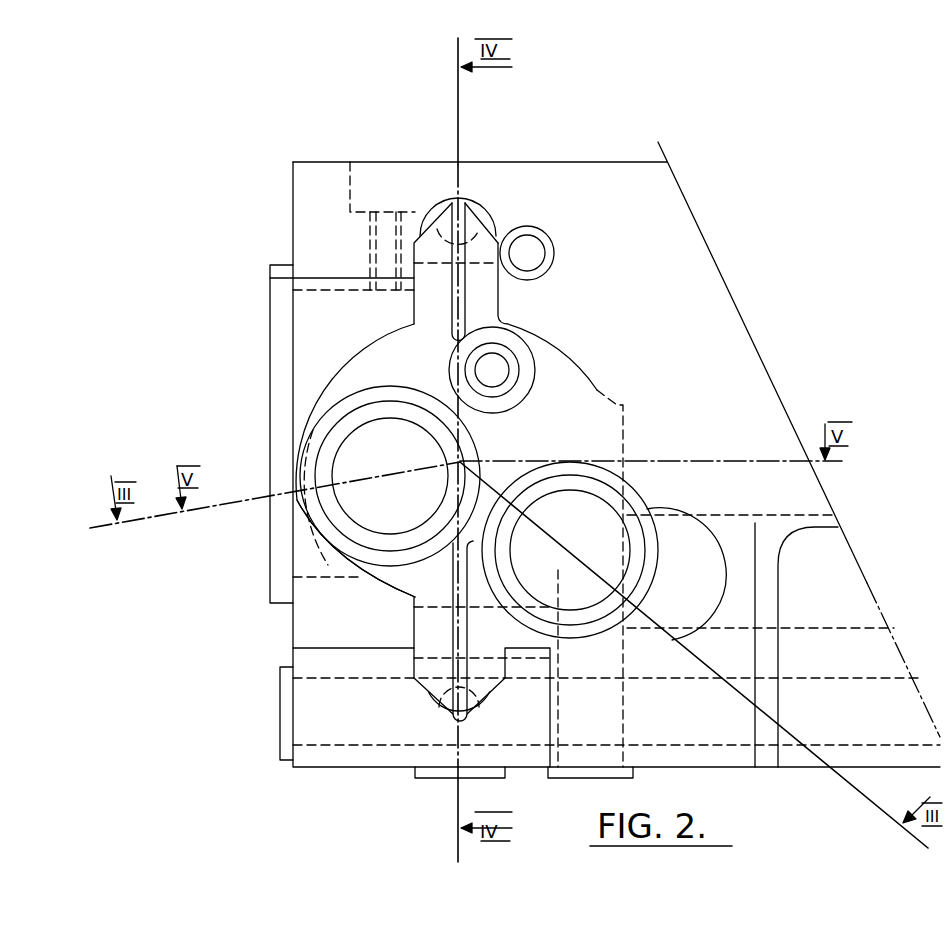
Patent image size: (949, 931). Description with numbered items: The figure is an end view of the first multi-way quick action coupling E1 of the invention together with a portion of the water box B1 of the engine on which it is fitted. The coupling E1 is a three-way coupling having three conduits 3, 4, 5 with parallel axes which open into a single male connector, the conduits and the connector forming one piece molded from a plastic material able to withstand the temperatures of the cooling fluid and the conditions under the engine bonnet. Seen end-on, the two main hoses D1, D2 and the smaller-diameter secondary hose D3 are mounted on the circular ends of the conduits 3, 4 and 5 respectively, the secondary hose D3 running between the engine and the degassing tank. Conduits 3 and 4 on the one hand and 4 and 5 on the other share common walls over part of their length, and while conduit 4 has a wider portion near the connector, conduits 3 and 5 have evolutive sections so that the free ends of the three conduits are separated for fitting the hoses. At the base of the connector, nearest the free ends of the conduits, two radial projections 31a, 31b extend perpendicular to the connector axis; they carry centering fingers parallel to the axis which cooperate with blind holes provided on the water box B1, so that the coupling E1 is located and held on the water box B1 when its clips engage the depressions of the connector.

The water box B1 is at (592, 180).
The radial projection 31a is at (427, 297).
The radial projection 31b is at (428, 640).
The main hose D2 is at (330, 410).
The conduit 4 is at (300, 447).
The secondary hose D3 is at (527, 335).
The conduit 5 is at (497, 368).
The main hose D1 is at (633, 497).
The conduit 3 is at (510, 543).
The multi-way quick action coupling E1 is at (365, 597).